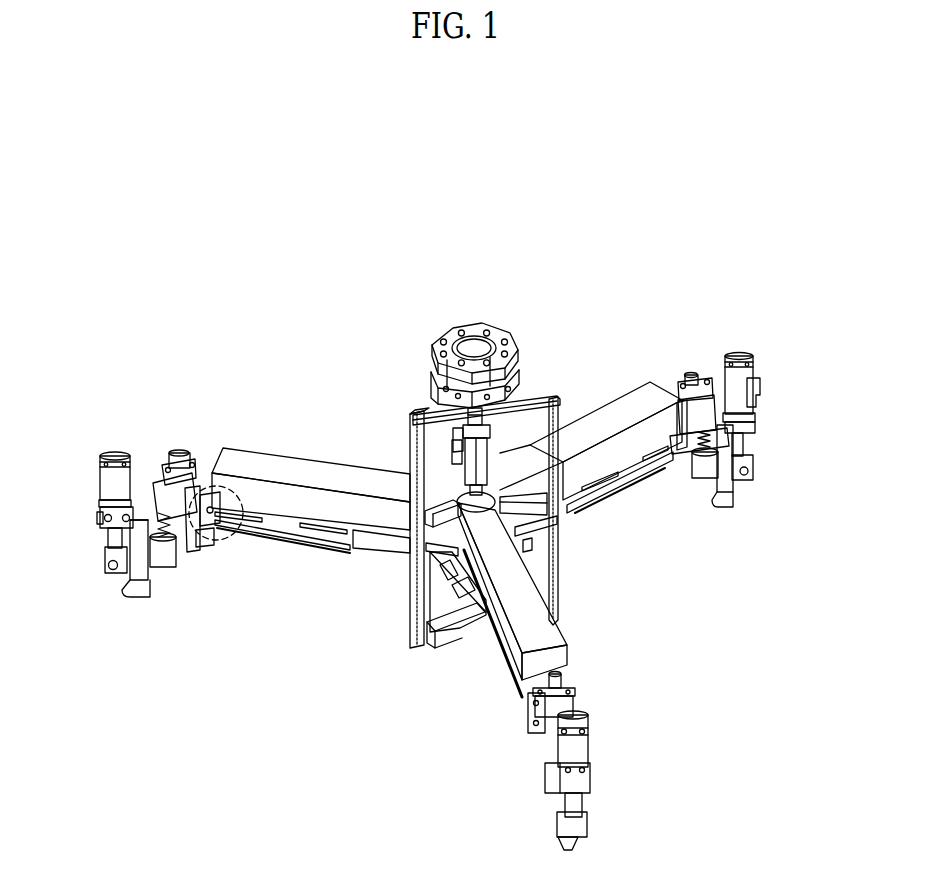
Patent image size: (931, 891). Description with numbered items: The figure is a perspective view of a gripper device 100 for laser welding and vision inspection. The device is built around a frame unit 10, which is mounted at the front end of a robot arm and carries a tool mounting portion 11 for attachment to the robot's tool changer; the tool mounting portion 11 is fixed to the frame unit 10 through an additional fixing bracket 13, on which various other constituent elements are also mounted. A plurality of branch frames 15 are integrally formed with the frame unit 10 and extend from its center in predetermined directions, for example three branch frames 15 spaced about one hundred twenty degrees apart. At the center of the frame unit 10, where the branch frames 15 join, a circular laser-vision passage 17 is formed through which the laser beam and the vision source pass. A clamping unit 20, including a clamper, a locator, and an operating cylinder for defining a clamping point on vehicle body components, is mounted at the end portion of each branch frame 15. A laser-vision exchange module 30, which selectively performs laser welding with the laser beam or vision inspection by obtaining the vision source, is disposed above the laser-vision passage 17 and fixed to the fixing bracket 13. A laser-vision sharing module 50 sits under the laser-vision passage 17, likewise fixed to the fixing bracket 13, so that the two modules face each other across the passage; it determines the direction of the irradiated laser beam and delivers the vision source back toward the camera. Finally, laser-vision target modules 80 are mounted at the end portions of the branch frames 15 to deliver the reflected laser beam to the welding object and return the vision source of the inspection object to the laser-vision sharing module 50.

The gripper device 100 is at (492, 240).
The frame unit 10 is at (317, 452).
The tool mounting portion 11 is at (489, 322).
The fixing bracket 13 is at (413, 588).
The branch frame 15 is at (249, 463).
The laser-vision passage 17 is at (532, 545).
The clamping unit 20 is at (767, 388).
The laser-vision exchange module 30 is at (497, 455).
The laser-vision sharing module 50 is at (458, 650).
The laser-vision target module 80 is at (206, 568).